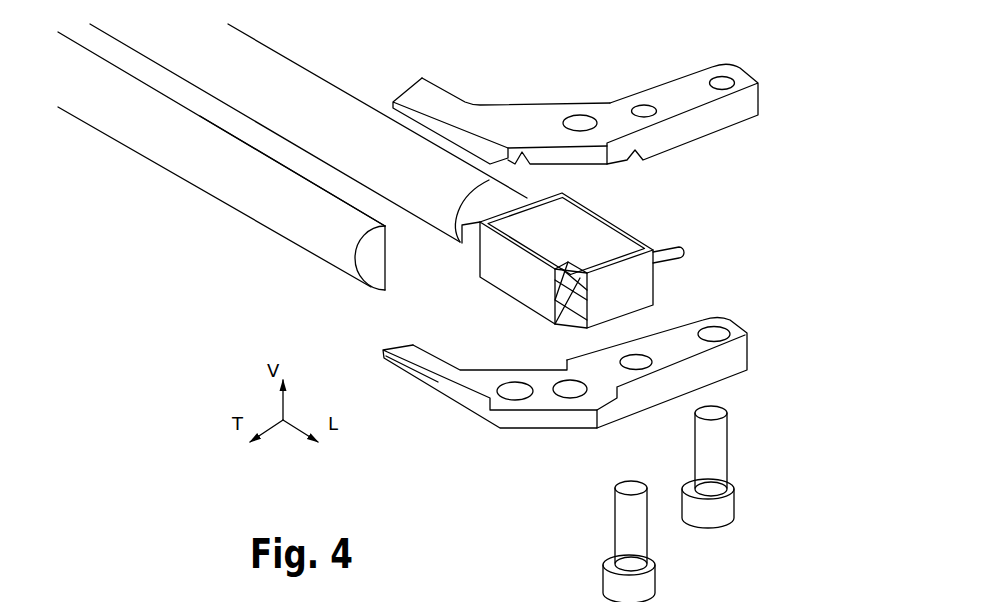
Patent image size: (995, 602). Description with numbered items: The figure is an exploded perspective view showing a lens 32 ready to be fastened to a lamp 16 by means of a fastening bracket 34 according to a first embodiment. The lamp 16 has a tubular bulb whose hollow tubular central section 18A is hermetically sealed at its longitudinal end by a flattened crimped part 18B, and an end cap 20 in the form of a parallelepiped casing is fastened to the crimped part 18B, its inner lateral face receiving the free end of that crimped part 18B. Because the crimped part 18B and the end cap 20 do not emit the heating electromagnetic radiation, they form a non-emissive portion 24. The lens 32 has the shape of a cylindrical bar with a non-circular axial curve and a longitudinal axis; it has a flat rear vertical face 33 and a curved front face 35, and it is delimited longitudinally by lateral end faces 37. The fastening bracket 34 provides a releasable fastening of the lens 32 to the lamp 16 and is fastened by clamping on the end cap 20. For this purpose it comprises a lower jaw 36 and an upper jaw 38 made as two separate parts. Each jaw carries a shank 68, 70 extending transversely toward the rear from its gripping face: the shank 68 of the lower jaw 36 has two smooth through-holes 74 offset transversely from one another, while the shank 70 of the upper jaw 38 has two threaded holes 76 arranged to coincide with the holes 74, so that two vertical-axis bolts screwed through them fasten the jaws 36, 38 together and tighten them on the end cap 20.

The lamp 16 is at (295, 51).
The hollow tubular central section 18A is at (352, 122).
The crimped part 18B is at (475, 242).
The end cap 20 is at (578, 252).
The non-emissive portion 24 is at (604, 216).
The lens 32 is at (248, 179).
The flat rear vertical face 33 is at (387, 239).
The fastening bracket 34 is at (627, 93).
The curved front face 35 is at (293, 217).
The lower jaw 36 is at (593, 387).
The lateral end face 37 is at (373, 270).
The upper jaw 38 is at (525, 96).
The shank of lower jaw 68 is at (685, 353).
The shank of upper jaw 70 is at (670, 97).
The smooth through-hole 74 is at (640, 356).
The threaded hole 76 is at (644, 108).